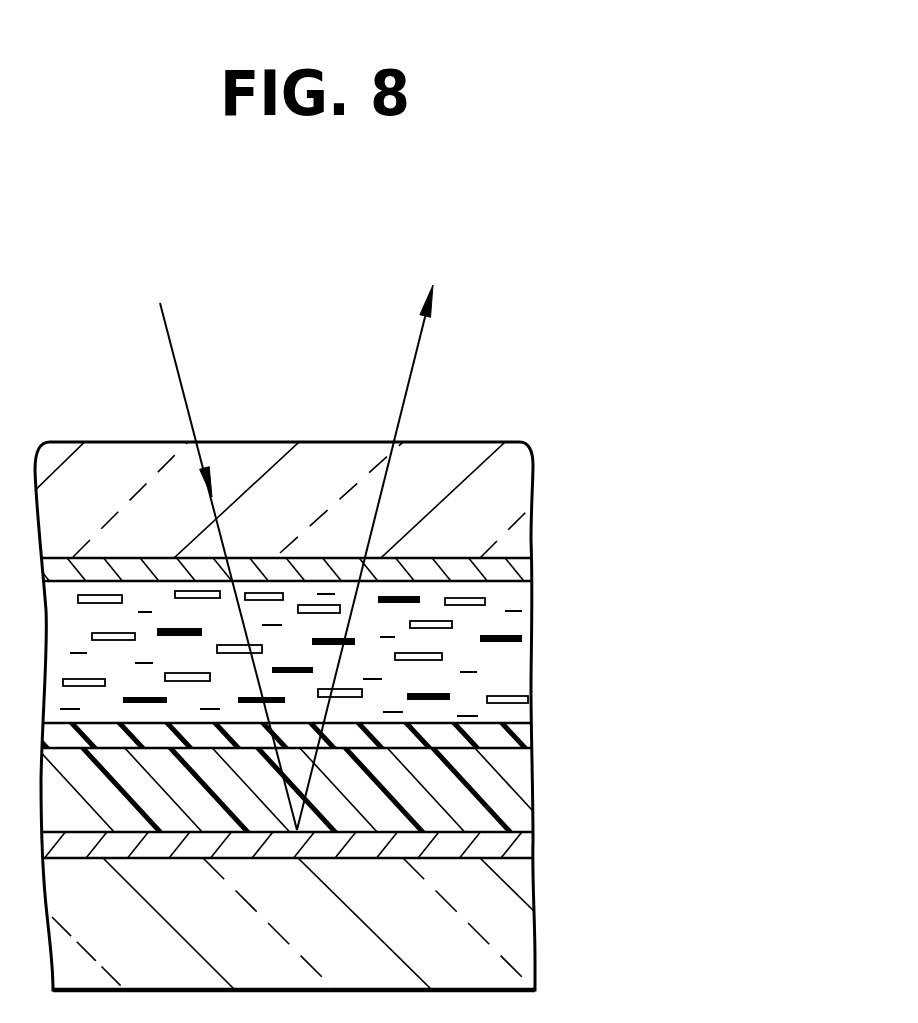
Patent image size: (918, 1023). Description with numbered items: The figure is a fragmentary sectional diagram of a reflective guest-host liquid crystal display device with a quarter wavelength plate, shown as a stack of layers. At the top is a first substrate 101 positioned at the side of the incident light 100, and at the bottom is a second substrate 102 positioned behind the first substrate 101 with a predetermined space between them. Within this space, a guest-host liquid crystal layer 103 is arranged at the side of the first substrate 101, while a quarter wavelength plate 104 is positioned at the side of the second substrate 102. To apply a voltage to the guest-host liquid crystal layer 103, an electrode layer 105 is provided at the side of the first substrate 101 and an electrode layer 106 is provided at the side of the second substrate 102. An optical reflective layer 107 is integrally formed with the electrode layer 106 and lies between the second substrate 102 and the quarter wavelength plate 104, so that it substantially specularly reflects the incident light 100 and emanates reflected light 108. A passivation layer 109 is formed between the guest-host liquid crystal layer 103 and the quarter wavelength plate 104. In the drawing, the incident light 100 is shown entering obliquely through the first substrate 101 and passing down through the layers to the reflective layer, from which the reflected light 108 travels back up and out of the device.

The incident light 100 is at (167, 333).
The first substrate 101 is at (502, 489).
The second substrate 102 is at (508, 912).
The guest-host liquid crystal layer 103 is at (513, 660).
The quarter wavelength plate 104 is at (513, 788).
The electrode layer 105 is at (520, 573).
The electrode layer 106 is at (402, 849).
The optical reflective layer 107 is at (517, 845).
The reflected light 108 is at (422, 334).
The passivation layer 109 is at (520, 737).